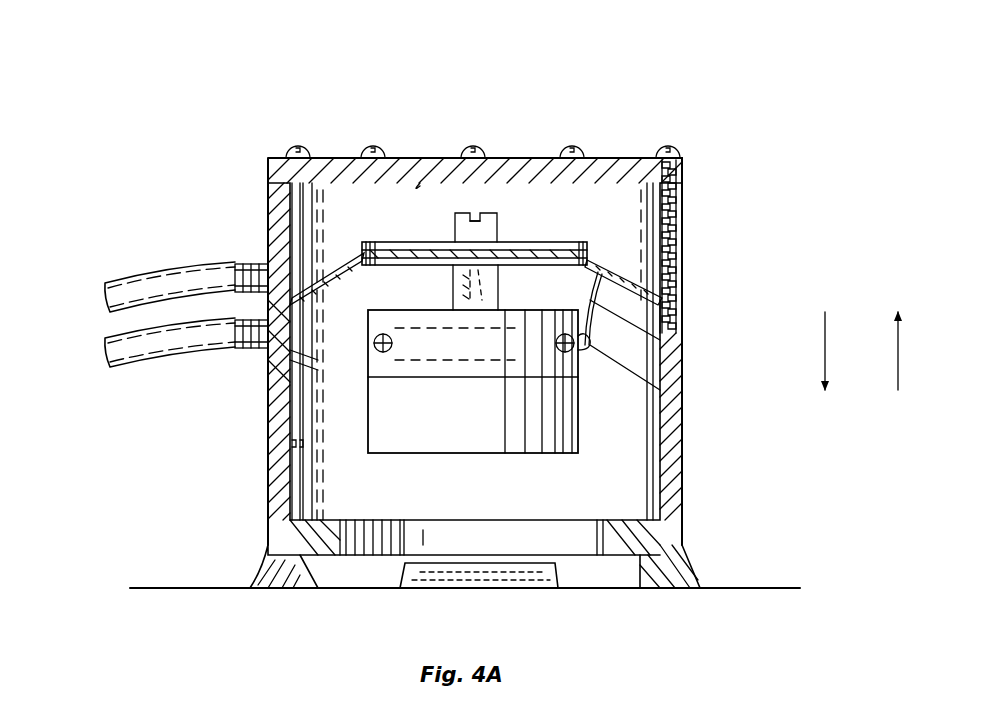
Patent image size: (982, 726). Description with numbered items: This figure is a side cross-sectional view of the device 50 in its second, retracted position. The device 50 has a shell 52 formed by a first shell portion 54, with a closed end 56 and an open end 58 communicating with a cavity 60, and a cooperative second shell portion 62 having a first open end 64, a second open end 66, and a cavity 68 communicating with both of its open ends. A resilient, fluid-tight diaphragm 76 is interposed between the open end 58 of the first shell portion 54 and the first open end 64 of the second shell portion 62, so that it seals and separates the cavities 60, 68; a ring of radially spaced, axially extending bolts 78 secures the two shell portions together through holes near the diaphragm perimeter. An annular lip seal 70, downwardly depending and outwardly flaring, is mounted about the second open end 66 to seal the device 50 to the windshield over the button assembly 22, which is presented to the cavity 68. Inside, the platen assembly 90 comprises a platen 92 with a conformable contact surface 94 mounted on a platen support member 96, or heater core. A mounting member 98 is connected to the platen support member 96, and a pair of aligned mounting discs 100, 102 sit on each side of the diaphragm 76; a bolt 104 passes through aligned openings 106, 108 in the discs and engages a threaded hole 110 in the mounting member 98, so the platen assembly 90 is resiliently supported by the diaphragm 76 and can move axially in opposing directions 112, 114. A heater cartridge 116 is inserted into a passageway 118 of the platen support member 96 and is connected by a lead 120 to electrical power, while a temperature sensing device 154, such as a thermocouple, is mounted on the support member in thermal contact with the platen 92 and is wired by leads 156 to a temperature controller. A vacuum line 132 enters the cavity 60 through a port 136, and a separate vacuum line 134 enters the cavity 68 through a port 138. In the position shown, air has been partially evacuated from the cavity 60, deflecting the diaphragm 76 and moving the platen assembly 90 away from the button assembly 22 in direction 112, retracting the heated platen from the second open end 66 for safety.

The device 50 is at (472, 326).
The shell 52 is at (262, 170).
The first shell portion 54 is at (688, 213).
The closed end 56 is at (412, 180).
The open end 58 is at (655, 292).
The cavity 60 is at (431, 228).
The second shell portion 62 is at (690, 476).
The first open end 64 is at (680, 326).
The second open end 66 is at (600, 540).
The cavity 68 is at (624, 494).
The annular lip seal 70 is at (694, 572).
The diaphragm 76 is at (626, 286).
The bolts 78 is at (292, 152).
The platen assembly 90 is at (455, 460).
The platen 92 is at (550, 455).
The contact surface 94 is at (415, 455).
The platen support member 96 is at (360, 380).
The mounting member 98 is at (318, 360).
The mounting disc 100 is at (290, 350).
The mounting disc 102 is at (383, 262).
The bolt 104 is at (495, 227).
The opening 106 is at (483, 245).
The opening 108 is at (443, 240).
The threaded hole 110 is at (500, 292).
The direction 112 is at (898, 370).
The direction 114 is at (825, 345).
The heater cartridge 116 is at (588, 336).
The passageway 118 is at (365, 330).
The lead 120 is at (598, 352).
The vacuum line 132 is at (122, 282).
The vacuum line 134 is at (125, 367).
The port 136 is at (240, 270).
The port 138 is at (245, 340).
The temperature sensing device 154 is at (590, 360).
The leads 156 is at (665, 342).
The button assembly 22 is at (428, 586).